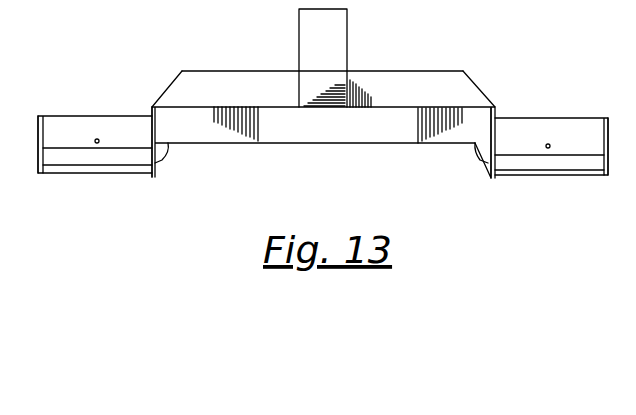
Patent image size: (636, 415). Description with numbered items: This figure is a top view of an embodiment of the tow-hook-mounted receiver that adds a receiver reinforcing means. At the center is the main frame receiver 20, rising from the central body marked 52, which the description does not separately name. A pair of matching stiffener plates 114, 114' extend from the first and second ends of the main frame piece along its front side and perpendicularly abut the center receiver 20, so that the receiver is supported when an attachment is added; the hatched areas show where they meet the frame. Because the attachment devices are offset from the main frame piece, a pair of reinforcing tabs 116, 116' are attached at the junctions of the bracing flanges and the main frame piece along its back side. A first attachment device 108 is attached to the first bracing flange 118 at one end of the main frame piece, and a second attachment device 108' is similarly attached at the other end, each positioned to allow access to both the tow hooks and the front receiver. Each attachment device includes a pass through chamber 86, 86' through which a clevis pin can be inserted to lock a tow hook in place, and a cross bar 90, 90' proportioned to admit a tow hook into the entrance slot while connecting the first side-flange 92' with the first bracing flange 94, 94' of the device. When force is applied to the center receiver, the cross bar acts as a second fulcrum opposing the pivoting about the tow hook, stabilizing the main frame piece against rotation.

The main frame receiver 20 is at (314, 27).
The cross member body 52 is at (323, 124).
The stiffener bar 114 is at (451, 71).
The stiffener plate 114' is at (168, 69).
The attachment device 108 is at (551, 118).
The second attachment device 108' is at (95, 106).
The pass through chamber 86 is at (581, 117).
The pass through chamber 86' is at (70, 110).
The cross bar 90 is at (549, 191).
The cross bar 90' is at (97, 180).
The first side-flange 92' is at (33, 184).
The first bracing flange 94 is at (619, 177).
The first bracing flange 94' is at (170, 176).
The reinforcing tab 116 is at (448, 163).
The reinforcing tab 116' is at (190, 162).
The first bracing flange 118 is at (490, 180).